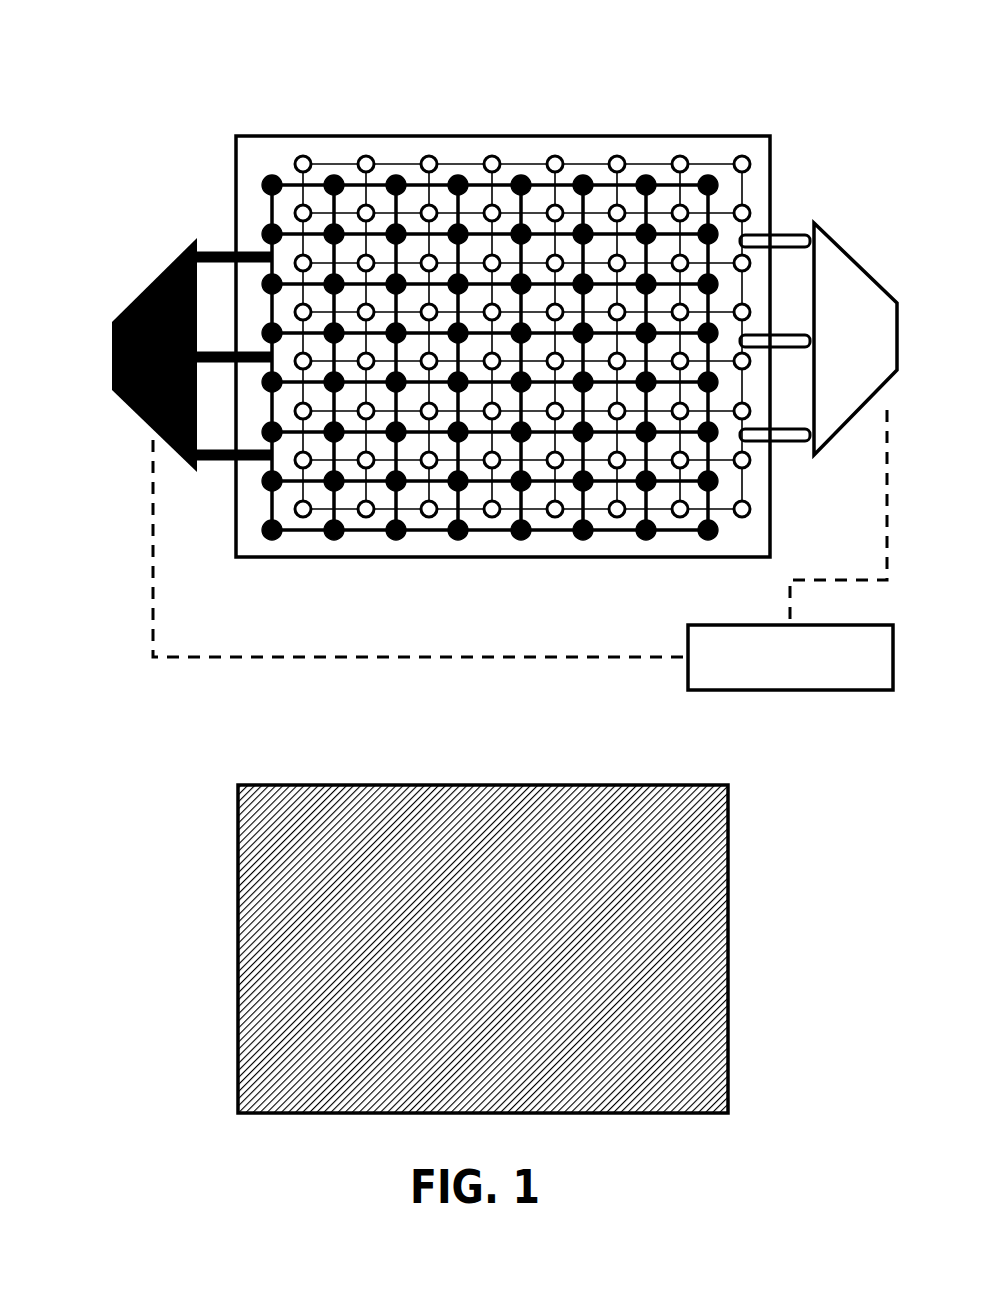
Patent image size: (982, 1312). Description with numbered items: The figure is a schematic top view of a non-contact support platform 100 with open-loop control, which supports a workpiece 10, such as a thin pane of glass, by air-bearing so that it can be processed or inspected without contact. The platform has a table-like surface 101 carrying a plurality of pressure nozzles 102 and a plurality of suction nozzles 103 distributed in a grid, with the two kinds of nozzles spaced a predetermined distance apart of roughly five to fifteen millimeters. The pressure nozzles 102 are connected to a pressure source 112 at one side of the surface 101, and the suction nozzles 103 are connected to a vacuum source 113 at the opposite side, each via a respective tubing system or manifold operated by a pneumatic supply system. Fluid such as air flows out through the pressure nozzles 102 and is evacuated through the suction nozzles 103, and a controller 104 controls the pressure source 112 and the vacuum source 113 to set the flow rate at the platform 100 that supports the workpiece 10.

The non-contact support platform 100 is at (106, 740).
The surface 101 is at (668, 134).
The pressure nozzles 102 is at (492, 156).
The suction nozzles 103 is at (396, 176).
The controller 104 is at (832, 692).
The pressure source 112 is at (862, 268).
The vacuum source 113 is at (142, 293).
The workpiece 10 is at (728, 948).